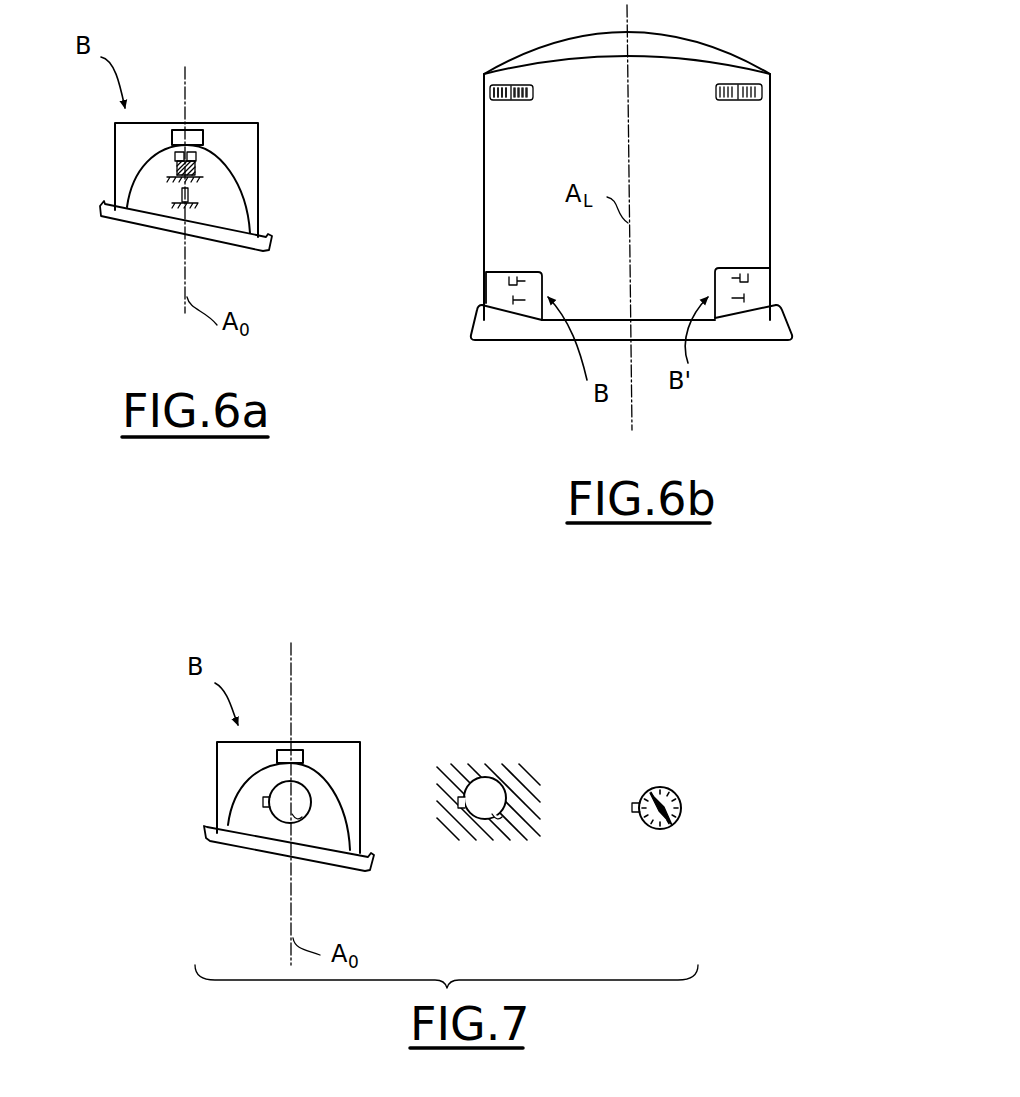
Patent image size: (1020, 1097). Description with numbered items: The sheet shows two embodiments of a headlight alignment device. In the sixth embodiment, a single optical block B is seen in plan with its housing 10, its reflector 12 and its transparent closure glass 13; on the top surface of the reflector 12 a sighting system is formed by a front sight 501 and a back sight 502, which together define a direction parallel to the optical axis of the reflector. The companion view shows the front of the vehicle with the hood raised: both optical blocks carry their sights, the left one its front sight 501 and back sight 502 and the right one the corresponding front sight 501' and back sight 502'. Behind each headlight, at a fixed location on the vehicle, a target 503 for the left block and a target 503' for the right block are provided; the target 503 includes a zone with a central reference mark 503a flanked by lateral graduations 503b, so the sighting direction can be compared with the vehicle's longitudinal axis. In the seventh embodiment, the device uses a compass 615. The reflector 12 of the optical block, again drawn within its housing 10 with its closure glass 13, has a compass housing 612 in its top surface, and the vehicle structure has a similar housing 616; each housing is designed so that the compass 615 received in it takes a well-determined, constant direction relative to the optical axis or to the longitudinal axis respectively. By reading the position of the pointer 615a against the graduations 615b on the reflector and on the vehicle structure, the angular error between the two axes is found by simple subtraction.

In FIG. 6a, the housing 10 is at (115, 145).
In FIG. 7, the housing 10 is at (217, 765).
In FIG. 6a, the reflector 12 is at (127, 195).
In FIG. 7, the reflector 12 is at (247, 820).
In FIG. 6a, the transparent closure glass 13 is at (115, 213).
In FIG. 7, the transparent closure glass 13 is at (233, 847).
In FIG. 6a, the front sight 501 is at (255, 194).
In FIG. 6b, the front sight 501 is at (461, 311).
In FIG. 6a, the back sight 502 is at (250, 148).
In FIG. 6b, the back sight 502 is at (465, 252).
In FIG. 6b, the target 503 is at (454, 71).
In FIG. 6b, the central reference mark 503a is at (515, 100).
In FIG. 6b, the lateral graduations 503b is at (527, 100).
In FIG. 6b, the target 503' is at (791, 119).
In FIG. 6b, the back sight 502' is at (799, 249).
In FIG. 6b, the front sight 501' is at (799, 290).
In FIG. 7, the compass housing 612 is at (300, 818).
In FIG. 7, the housing 616 is at (497, 818).
In FIG. 7, the compass 615 is at (667, 833).
In FIG. 7, the pointer 615a is at (660, 788).
In FIG. 7, the graduations 615b is at (650, 795).